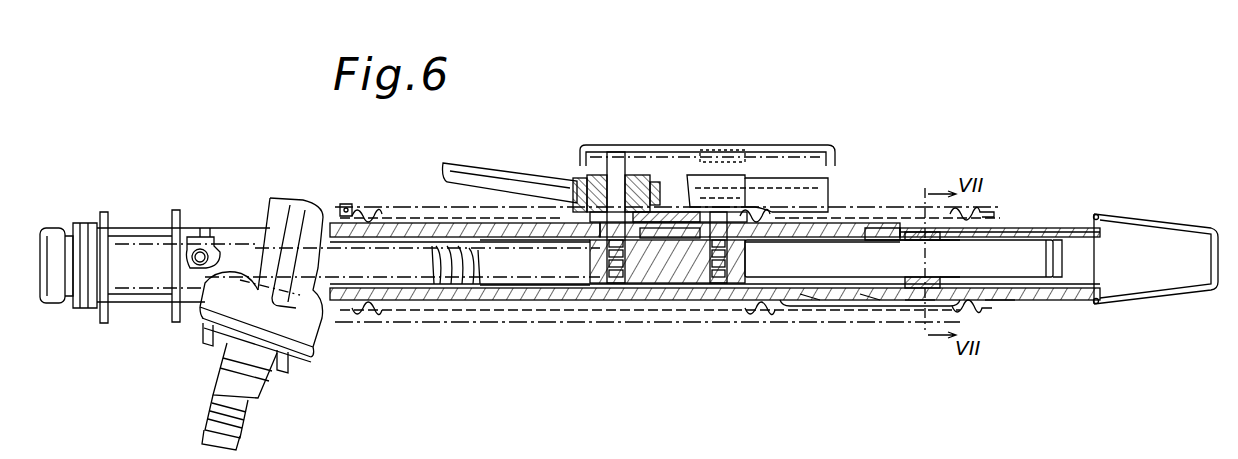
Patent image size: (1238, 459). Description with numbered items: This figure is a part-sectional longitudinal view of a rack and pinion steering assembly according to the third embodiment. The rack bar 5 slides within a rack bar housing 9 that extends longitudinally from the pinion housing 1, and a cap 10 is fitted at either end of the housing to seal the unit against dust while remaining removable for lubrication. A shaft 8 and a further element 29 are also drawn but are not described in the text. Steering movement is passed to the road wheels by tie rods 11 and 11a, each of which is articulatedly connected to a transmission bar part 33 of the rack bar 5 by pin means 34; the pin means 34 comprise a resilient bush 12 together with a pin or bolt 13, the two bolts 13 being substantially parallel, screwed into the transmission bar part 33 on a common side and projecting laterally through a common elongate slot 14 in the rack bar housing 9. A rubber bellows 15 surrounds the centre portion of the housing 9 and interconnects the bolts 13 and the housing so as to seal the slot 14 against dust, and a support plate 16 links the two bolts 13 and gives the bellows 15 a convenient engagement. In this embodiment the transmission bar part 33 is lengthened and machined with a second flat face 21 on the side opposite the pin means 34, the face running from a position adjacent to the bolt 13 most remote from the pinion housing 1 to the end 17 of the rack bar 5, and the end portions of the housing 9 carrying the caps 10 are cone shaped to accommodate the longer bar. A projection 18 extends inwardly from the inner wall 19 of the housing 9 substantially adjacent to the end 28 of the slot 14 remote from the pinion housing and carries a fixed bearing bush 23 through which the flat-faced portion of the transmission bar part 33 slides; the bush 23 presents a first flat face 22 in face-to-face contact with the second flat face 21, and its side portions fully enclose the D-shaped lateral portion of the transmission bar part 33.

The pinion housing 1 is at (312, 325).
The rack bar 5 is at (139, 252).
The pinion shaft 8 is at (214, 407).
The rack bar housing 9 is at (808, 302).
The cap 10 is at (52, 230).
The tie rod 11 is at (503, 176).
The tie rod 11a is at (802, 180).
The resilient bush 12 is at (638, 178).
The pin or bolt 13 is at (614, 166).
The elongate slot 14 is at (866, 236).
The rubber bellows 15 is at (364, 212).
The support plate 16 is at (692, 222).
The end of the rack bar 17 is at (1062, 290).
The projection 18 is at (907, 302).
The inner wall 19 is at (1034, 300).
The second flat face 21 is at (850, 300).
The first flat face 22 is at (944, 243).
The bearing bush 23 is at (899, 258).
The end of the slot 28 is at (872, 240).
The bearing ring 29 is at (926, 280).
The transmission bar part 33 is at (562, 278).
The pin means 34 is at (569, 170).